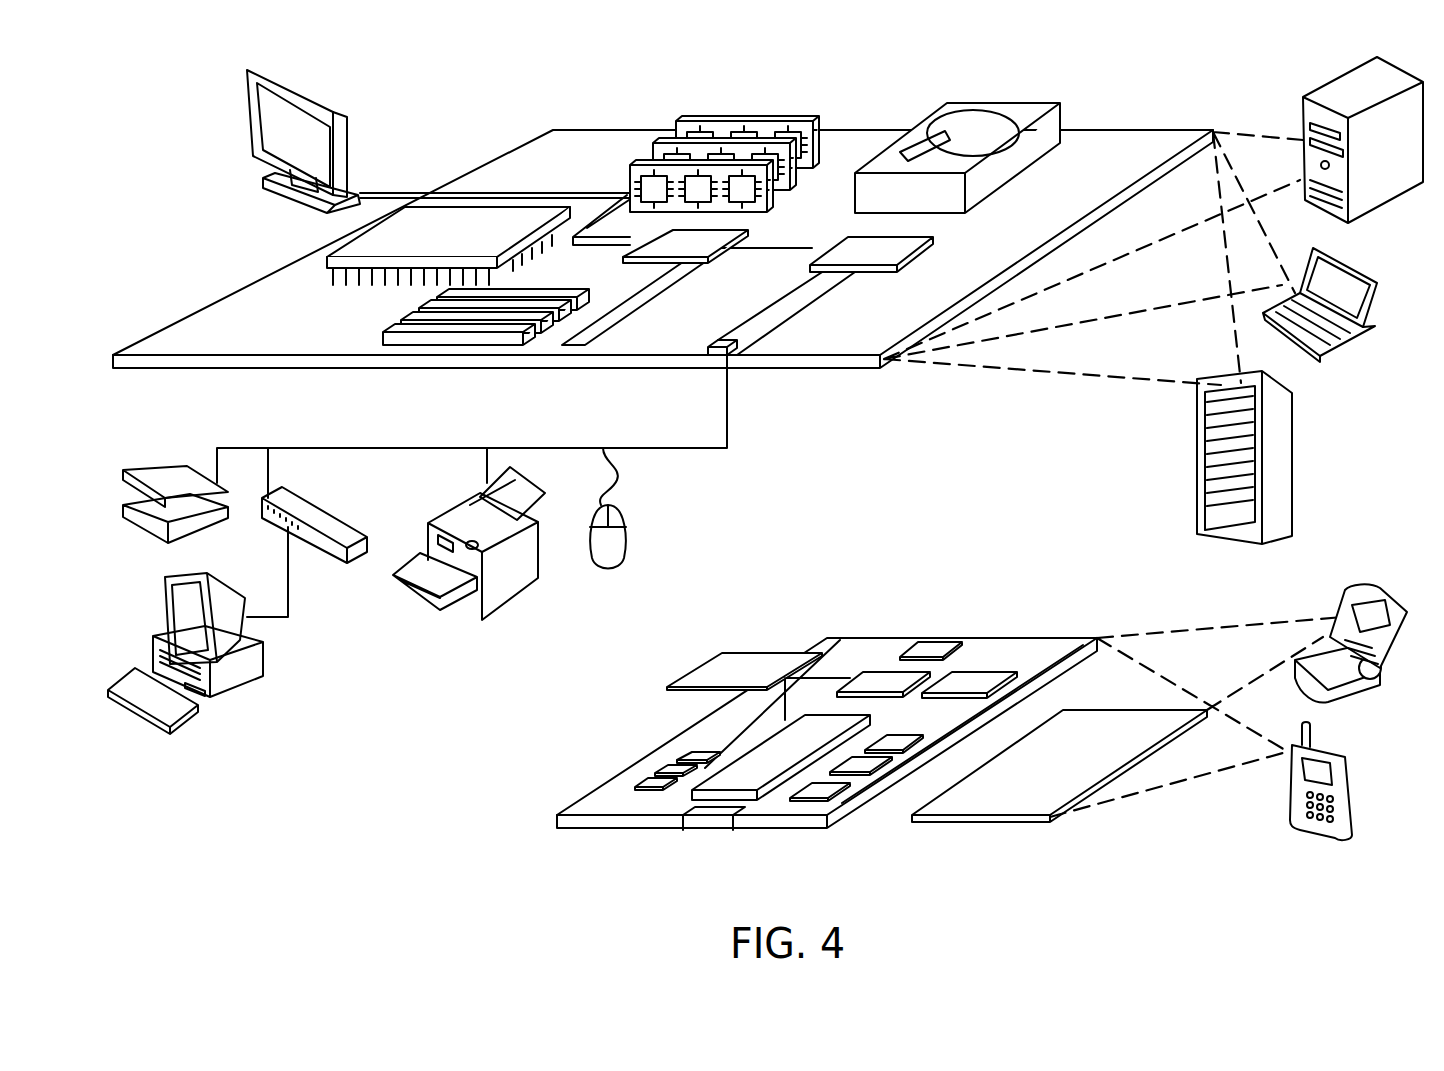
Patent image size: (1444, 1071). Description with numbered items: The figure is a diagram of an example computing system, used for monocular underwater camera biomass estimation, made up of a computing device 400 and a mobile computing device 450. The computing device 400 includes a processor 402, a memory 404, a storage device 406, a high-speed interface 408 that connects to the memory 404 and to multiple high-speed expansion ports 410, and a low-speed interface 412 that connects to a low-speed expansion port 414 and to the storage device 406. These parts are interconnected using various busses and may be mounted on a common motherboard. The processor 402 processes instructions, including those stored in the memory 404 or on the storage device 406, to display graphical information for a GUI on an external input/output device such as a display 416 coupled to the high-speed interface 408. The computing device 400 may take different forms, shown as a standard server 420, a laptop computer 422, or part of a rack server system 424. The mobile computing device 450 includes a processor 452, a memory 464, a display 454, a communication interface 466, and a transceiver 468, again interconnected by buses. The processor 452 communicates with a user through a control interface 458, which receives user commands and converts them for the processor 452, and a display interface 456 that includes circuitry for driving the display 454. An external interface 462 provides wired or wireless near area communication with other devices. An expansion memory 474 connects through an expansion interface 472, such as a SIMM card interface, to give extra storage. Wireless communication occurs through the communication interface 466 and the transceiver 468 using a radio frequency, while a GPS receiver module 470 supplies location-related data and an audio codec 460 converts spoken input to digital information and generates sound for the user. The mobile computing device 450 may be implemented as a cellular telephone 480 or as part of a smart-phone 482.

The computing device 400 is at (184, 98).
The processor 402 is at (330, 260).
The memory 404 is at (693, 124).
The storage device 406 is at (937, 122).
The high-speed interface 408 is at (650, 238).
The high-speed expansion ports 410 is at (400, 323).
The low-speed interface 412 is at (850, 240).
The low-speed expansion port 414 is at (740, 355).
The display 416 is at (314, 100).
The standard server 420 is at (1303, 108).
The laptop computer 422 is at (1328, 348).
The rack server system 424 is at (1198, 492).
The mobile computing device 450 is at (532, 786).
The processor 452 is at (753, 782).
The display 454 is at (1012, 802).
The display interface 456 is at (820, 790).
The control interface 458 is at (852, 762).
The audio codec 460 is at (872, 745).
The external interface 462 is at (712, 818).
The memory 464 is at (656, 772).
The communication interface 466 is at (878, 680).
The transceiver 468 is at (968, 678).
The GPS receiver module 470 is at (932, 648).
The expansion interface 472 is at (787, 653).
The expansion memory 474 is at (722, 655).
The cellular telephone 480 is at (1362, 603).
The smart-phone 482 is at (1292, 765).